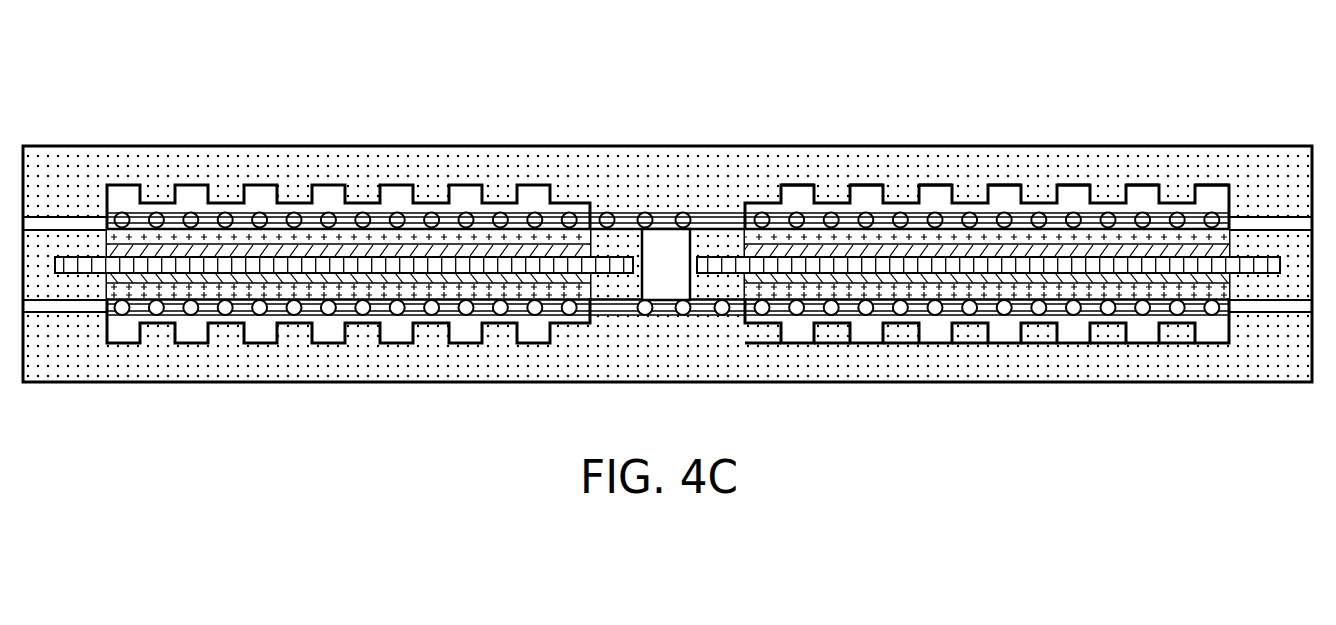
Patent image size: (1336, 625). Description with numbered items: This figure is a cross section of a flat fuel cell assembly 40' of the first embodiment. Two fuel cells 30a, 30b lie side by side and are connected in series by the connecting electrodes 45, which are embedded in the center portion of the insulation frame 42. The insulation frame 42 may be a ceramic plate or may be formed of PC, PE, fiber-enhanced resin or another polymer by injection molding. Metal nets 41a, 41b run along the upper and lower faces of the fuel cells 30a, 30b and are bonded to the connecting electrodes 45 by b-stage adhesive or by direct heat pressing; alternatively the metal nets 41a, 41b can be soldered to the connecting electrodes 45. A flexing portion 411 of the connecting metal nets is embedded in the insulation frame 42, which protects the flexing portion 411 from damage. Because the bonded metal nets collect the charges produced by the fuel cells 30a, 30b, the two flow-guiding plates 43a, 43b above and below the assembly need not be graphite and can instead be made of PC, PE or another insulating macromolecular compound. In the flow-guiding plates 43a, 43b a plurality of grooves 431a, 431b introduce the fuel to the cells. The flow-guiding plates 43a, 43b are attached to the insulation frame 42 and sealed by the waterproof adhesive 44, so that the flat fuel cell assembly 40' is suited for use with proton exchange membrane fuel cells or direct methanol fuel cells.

The flat fuel cell assembly 40' is at (667, 229).
The fuel cell 30a is at (352, 200).
The fuel cell 30b is at (1024, 211).
The metal net 41a is at (485, 224).
The metal net 41b is at (1062, 309).
The flexing portion 411 is at (556, 216).
The insulation frame 42 is at (624, 235).
The flow-guiding plate 43a is at (1143, 160).
The flow-guiding plate 43b is at (1145, 367).
The grooves 431a is at (867, 194).
The grooves 431b is at (868, 333).
The waterproof adhesive 44 is at (719, 222).
The connecting electrodes 45 is at (662, 236).